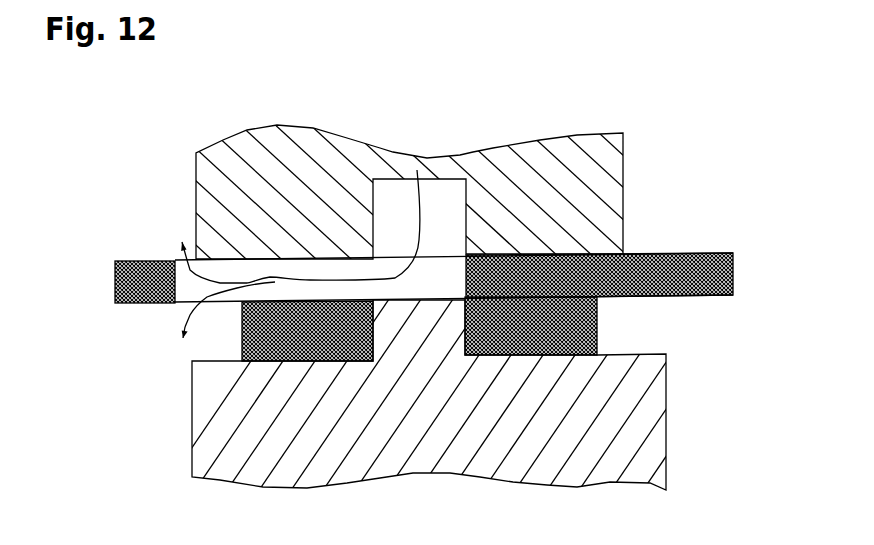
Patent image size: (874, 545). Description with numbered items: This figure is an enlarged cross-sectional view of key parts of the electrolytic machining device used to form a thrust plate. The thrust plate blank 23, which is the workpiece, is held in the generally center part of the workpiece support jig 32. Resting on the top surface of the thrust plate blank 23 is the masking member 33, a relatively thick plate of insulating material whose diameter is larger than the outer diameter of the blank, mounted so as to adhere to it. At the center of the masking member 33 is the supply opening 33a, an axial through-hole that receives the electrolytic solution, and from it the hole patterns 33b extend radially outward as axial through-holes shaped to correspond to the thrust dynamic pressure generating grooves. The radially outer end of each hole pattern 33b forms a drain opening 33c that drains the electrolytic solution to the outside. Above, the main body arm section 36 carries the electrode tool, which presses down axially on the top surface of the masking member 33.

The main body arm section 36 is at (623, 167).
The workpiece support jig 32 is at (192, 402).
The thrust plate blank 23 is at (597, 321).
The masking member 33 is at (678, 252).
The supply opening 33a is at (427, 273).
The hole patterns 33b is at (252, 258).
The drain opening 33c is at (188, 282).